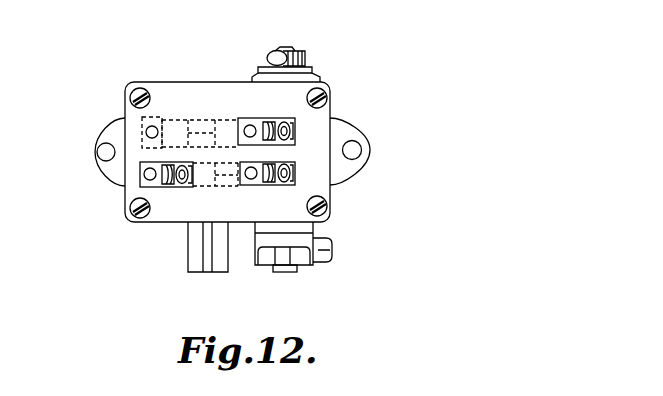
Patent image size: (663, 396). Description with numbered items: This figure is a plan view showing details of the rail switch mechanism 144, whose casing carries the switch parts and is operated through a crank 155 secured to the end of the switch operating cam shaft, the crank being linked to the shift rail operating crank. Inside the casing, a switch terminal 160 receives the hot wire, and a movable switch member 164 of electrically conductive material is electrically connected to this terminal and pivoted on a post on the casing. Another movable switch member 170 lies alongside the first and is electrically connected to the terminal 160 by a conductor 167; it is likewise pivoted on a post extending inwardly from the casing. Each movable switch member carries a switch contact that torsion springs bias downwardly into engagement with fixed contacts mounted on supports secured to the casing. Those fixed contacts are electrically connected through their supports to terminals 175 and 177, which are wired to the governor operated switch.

The rail switch mechanism 144 is at (333, 55).
The crank 155 is at (297, 262).
The switch terminal 160 is at (180, 187).
The movable switch member 164 is at (207, 189).
The conductor 167 is at (143, 152).
The movable switch member 170 is at (197, 126).
The terminal 175 is at (296, 175).
The terminal 177 is at (294, 133).